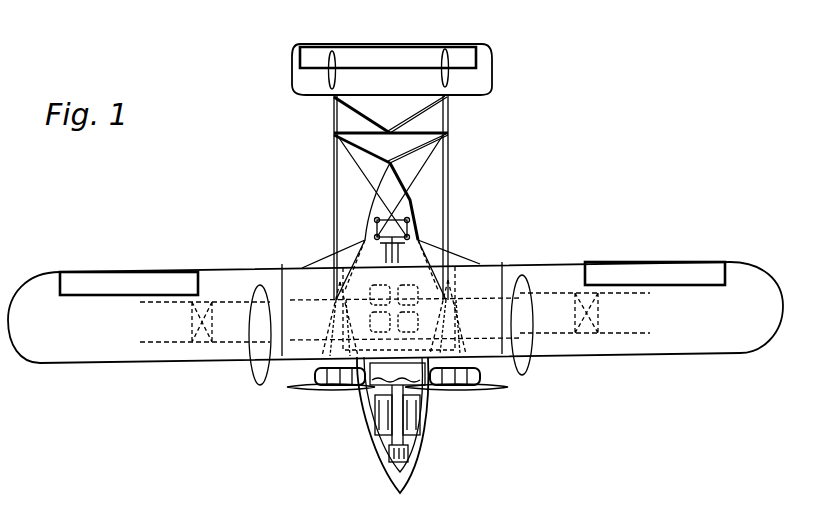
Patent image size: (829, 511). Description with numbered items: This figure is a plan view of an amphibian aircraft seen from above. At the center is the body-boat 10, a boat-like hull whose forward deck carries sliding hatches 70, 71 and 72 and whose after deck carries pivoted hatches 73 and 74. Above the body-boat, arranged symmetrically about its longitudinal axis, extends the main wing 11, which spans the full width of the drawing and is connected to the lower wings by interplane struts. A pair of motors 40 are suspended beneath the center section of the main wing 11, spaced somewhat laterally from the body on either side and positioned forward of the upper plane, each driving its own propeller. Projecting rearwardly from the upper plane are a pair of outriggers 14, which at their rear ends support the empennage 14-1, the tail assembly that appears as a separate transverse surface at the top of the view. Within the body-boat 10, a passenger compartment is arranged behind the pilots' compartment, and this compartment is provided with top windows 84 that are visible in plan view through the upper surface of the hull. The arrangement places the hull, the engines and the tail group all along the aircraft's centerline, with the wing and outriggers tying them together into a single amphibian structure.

The body-boat 10 is at (405, 478).
The main wing 11 is at (116, 348).
The outriggers 14 is at (333, 180).
The empennage 14-1 is at (403, 76).
The motors 40 is at (325, 372).
The sliding hatch 70 is at (410, 455).
The sliding hatch 71 is at (378, 432).
The sliding hatch 72 is at (432, 428).
The pivoted hatch 73 is at (365, 240).
The pivoted hatch 74 is at (418, 240).
The top windows 84 is at (350, 306).